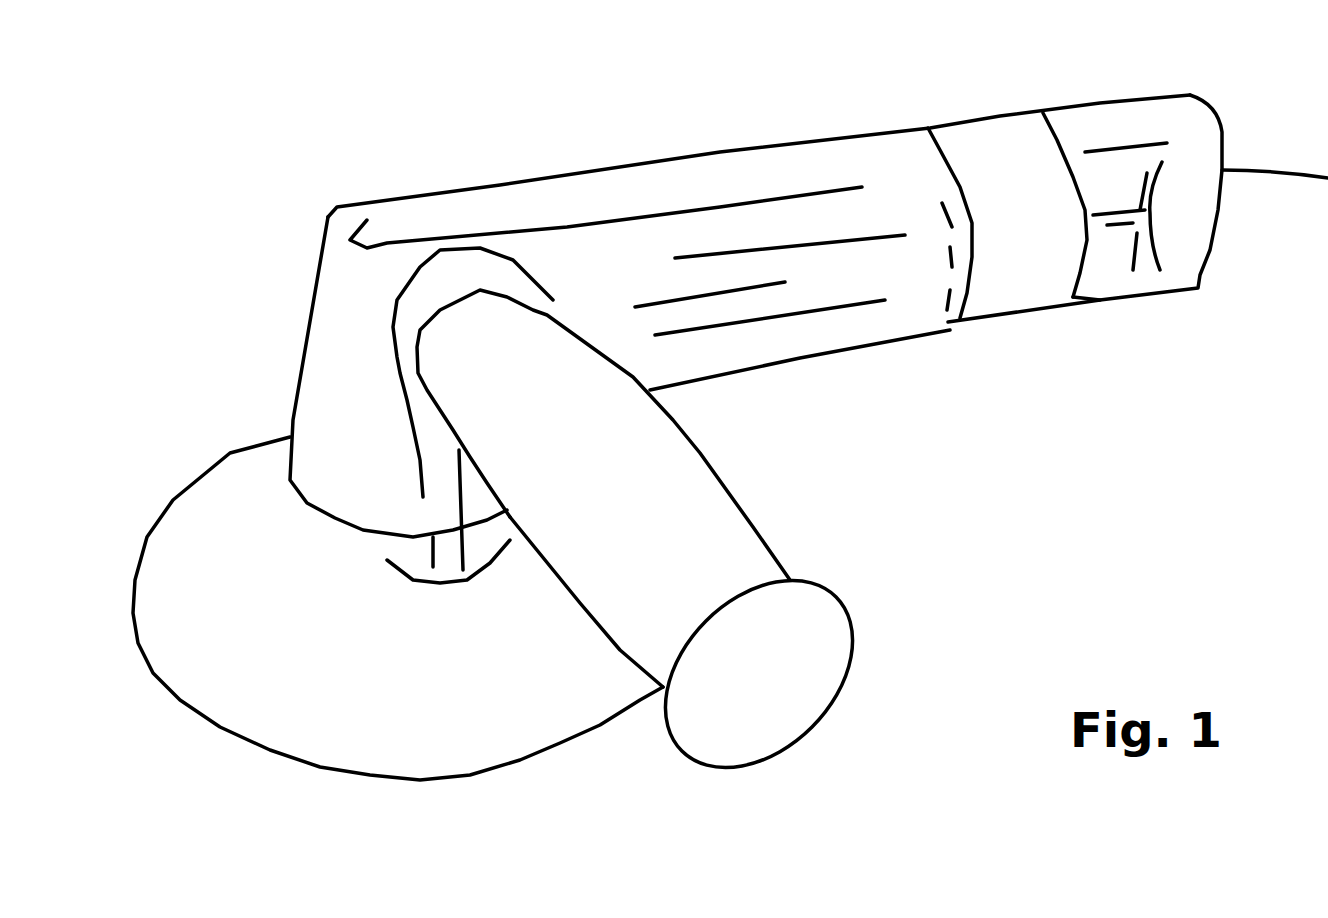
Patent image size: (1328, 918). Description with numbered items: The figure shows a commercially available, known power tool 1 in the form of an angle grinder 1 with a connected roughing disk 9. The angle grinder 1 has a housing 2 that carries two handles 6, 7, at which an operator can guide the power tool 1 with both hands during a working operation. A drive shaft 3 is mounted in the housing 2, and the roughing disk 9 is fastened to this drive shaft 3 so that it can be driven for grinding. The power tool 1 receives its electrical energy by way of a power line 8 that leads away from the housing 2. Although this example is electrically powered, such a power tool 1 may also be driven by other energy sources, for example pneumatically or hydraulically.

The power tool 1 is at (264, 113).
The housing 2 is at (733, 165).
The drive shaft 3 is at (427, 540).
The handle 6 is at (667, 477).
The handle 7 is at (970, 155).
The power line 8 is at (1240, 160).
The roughing disk 9 is at (463, 772).